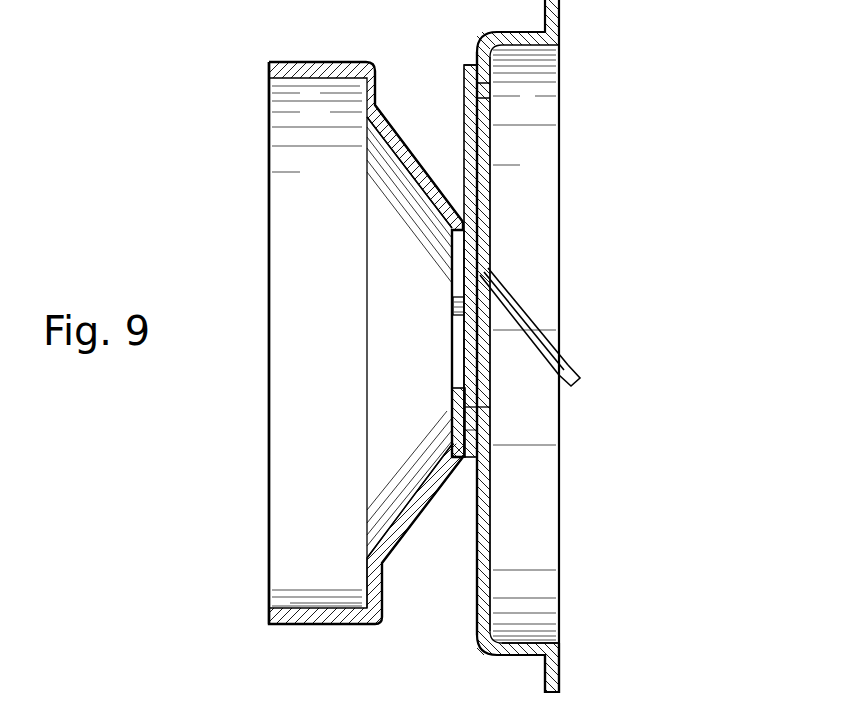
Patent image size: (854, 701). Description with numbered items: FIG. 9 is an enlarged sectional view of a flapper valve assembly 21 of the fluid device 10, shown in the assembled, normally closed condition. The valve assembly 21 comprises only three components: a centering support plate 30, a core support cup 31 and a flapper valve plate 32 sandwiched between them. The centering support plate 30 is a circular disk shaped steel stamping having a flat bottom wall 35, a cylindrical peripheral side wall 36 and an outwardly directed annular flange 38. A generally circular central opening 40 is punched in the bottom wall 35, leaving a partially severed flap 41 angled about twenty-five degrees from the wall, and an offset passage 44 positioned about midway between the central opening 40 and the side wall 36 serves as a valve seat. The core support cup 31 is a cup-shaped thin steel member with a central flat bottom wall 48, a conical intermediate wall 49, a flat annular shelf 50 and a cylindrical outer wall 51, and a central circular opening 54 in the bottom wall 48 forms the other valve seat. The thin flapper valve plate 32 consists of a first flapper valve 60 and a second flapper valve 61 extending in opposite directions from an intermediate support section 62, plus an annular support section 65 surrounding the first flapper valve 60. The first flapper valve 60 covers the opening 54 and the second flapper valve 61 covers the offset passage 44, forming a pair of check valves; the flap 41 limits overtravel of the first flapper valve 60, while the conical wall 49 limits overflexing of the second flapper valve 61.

The fastening device 10 is at (76, 700).
The valve assembly 21 is at (606, 581).
The centering support plate 30 is at (490, 585).
The core support cup 31 is at (269, 612).
The flapper valve plate 32 is at (465, 64).
The flat bottom wall 35 is at (490, 527).
The cylindrical peripheral side wall 36 is at (518, 656).
The outwardly directed annular flange 38 is at (560, 670).
The central opening 40 is at (490, 408).
The flap 41 is at (572, 366).
The offset passage 44 is at (478, 190).
The central flat bottom wall 48 is at (452, 388).
The conical intermediate wall 49 is at (400, 518).
The flat annular shelf 50 is at (368, 586).
The cylindrical outer wall 51 is at (322, 624).
The central circular opening 54 is at (452, 313).
The first flapper valve 60 is at (473, 357).
The second flapper valve 61 is at (464, 97).
The intermediate support section 62 is at (470, 225).
The annular support section 65 is at (470, 438).